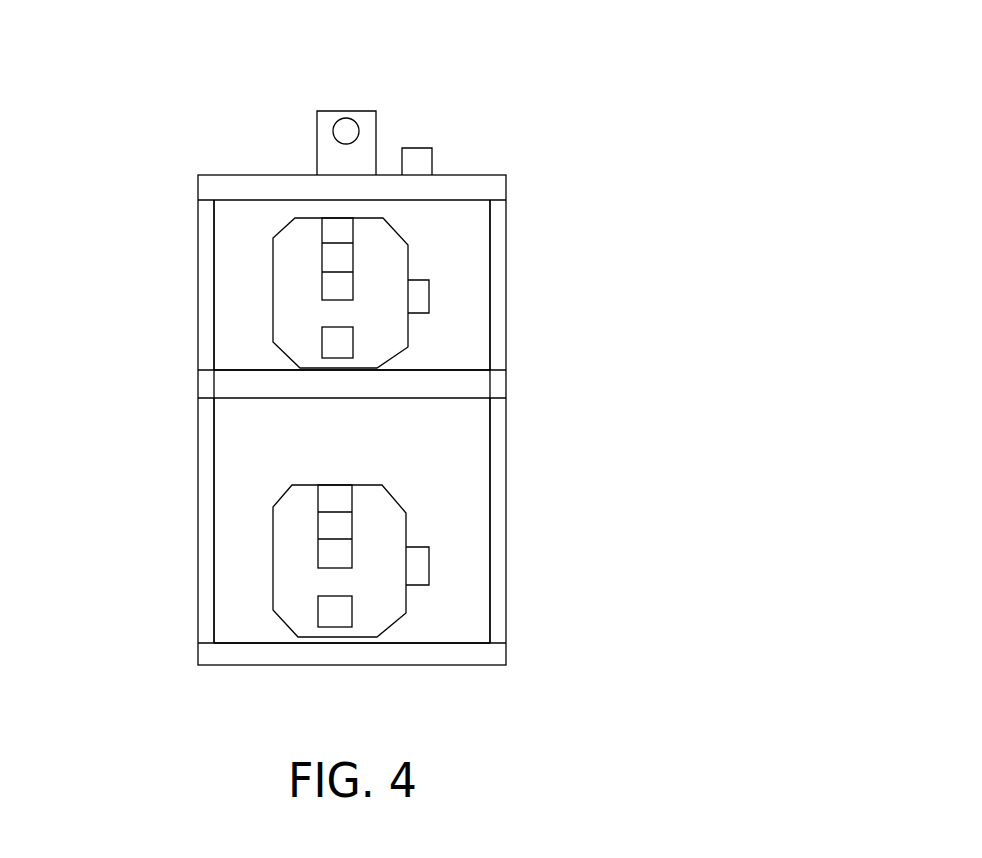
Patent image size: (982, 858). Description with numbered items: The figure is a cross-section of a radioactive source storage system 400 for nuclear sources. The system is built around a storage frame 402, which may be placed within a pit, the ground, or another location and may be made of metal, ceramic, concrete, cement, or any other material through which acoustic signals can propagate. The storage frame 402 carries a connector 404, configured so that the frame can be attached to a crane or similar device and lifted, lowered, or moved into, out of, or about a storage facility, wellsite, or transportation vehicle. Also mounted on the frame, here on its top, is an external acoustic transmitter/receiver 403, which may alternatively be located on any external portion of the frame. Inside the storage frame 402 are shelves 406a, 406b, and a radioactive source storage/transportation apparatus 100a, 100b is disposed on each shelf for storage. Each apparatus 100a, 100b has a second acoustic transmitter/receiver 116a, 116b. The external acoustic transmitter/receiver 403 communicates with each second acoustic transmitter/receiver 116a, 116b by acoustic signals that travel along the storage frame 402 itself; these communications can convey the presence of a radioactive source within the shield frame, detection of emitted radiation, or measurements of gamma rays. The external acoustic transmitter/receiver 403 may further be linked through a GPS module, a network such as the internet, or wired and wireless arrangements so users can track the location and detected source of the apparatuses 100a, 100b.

The radioactive source storage system 400 is at (162, 145).
The storage frame 402 is at (488, 174).
The external acoustic transmitter/receiver 403 is at (413, 147).
The connector 404 is at (345, 109).
The shelf 406a is at (237, 370).
The shelf 406b is at (247, 640).
The radioactive source storage/transportation apparatus 100a is at (398, 235).
The radioactive source storage/transportation apparatus 100b is at (394, 502).
The second acoustic transmitter/receiver 116a is at (429, 280).
The second acoustic transmitter/receiver 116b is at (429, 547).